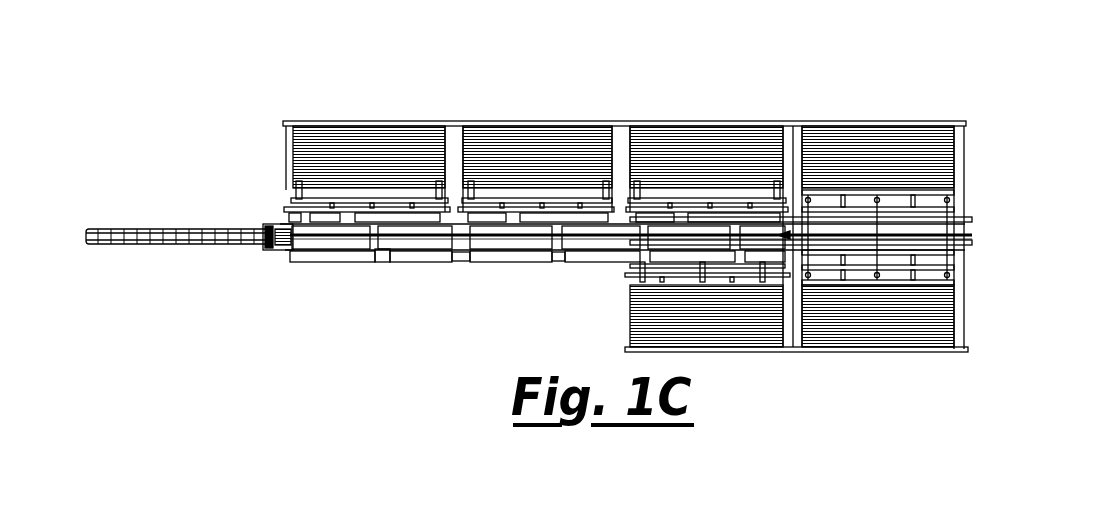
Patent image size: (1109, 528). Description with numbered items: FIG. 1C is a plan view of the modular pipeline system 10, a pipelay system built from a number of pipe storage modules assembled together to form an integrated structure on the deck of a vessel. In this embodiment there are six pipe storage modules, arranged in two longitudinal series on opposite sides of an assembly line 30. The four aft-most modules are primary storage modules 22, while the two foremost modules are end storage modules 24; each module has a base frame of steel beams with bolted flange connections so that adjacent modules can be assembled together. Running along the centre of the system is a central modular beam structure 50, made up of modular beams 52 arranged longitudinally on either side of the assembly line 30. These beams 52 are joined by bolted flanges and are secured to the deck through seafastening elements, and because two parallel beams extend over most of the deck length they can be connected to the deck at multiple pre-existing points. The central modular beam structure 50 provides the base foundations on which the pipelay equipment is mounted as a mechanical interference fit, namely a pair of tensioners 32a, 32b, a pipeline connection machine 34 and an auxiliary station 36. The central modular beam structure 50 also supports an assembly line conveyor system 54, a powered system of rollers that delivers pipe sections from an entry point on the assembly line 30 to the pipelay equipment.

The modular pipeline system 10 is at (258, 105).
The primary storage modules 22 is at (665, 150).
The end storage modules 24 is at (857, 150).
The assembly line 30 is at (288, 270).
The tensioner 32a is at (512, 260).
The tensioner 32b is at (322, 260).
The pipeline connection machine 34 is at (587, 260).
The auxiliary station 36 is at (420, 260).
The central modular beam structure 50 is at (376, 260).
The modular beams 52 is at (493, 260).
The assembly line conveyor system 54 is at (719, 235).